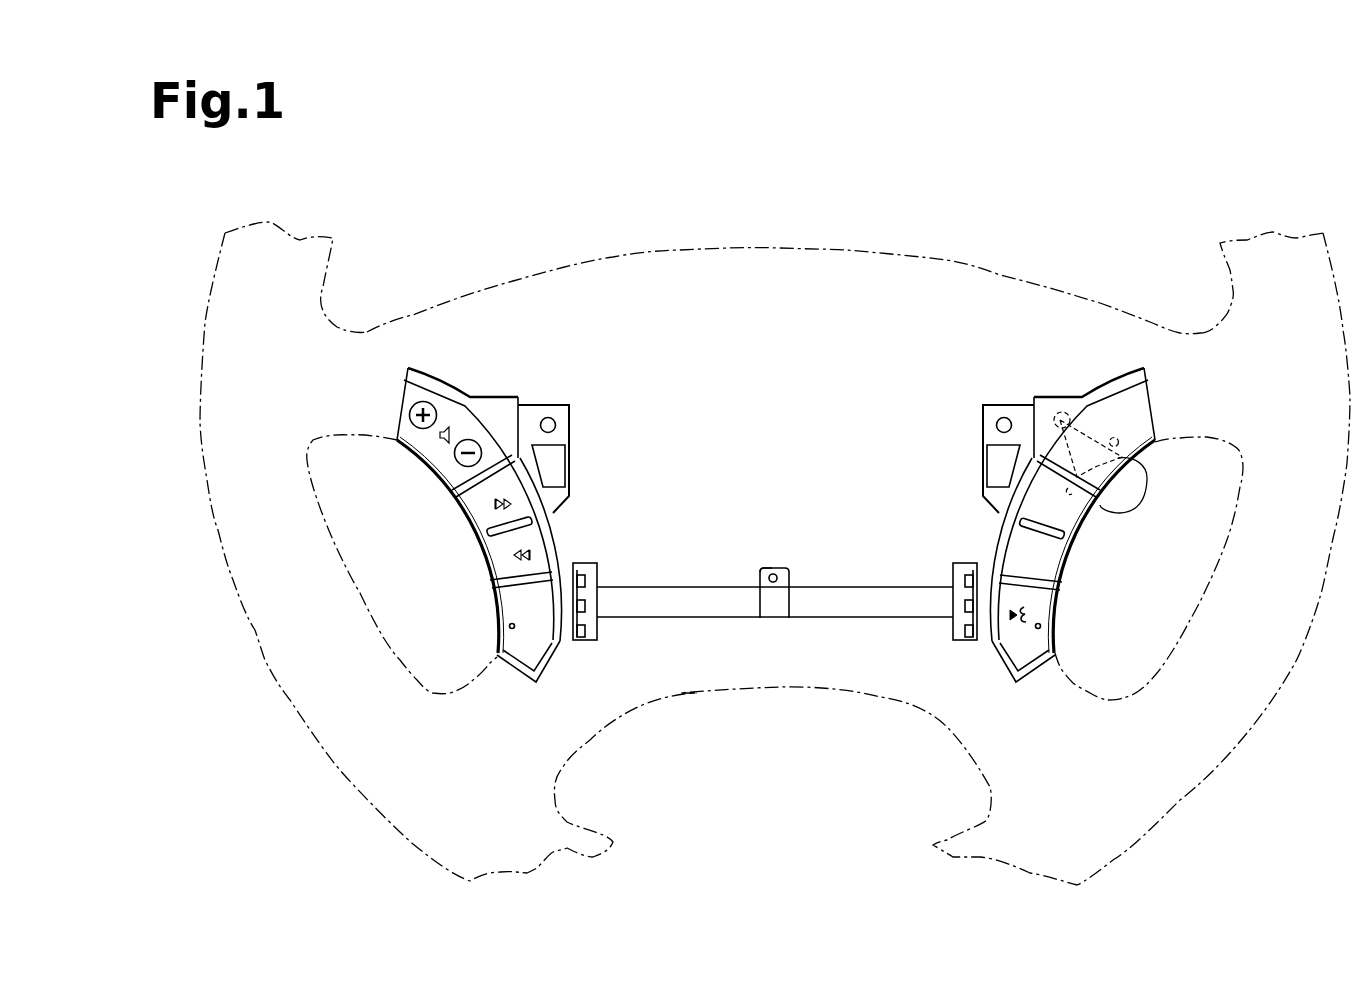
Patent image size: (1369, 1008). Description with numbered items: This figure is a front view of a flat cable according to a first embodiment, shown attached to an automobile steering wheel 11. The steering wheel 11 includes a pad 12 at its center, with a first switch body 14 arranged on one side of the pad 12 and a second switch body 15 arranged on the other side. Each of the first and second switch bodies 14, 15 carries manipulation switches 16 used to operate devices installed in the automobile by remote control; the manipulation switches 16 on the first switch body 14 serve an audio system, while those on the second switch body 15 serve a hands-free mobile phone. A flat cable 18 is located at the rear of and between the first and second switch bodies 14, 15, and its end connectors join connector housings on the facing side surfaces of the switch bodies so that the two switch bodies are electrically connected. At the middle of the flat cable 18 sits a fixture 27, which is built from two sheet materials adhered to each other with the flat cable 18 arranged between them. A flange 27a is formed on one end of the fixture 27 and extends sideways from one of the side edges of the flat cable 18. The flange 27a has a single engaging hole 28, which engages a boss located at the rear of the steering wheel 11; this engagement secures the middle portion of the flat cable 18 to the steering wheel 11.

The steering wheel 11 is at (857, 250).
The pad 12 is at (683, 252).
The first switch body 14 is at (767, 525).
The second switch body 15 is at (989, 548).
The manipulation switches 16 is at (507, 602).
The flat cable 18 is at (817, 588).
The fixture 27 is at (740, 592).
The flange 27a is at (760, 578).
The engaging hole 28 is at (777, 572).